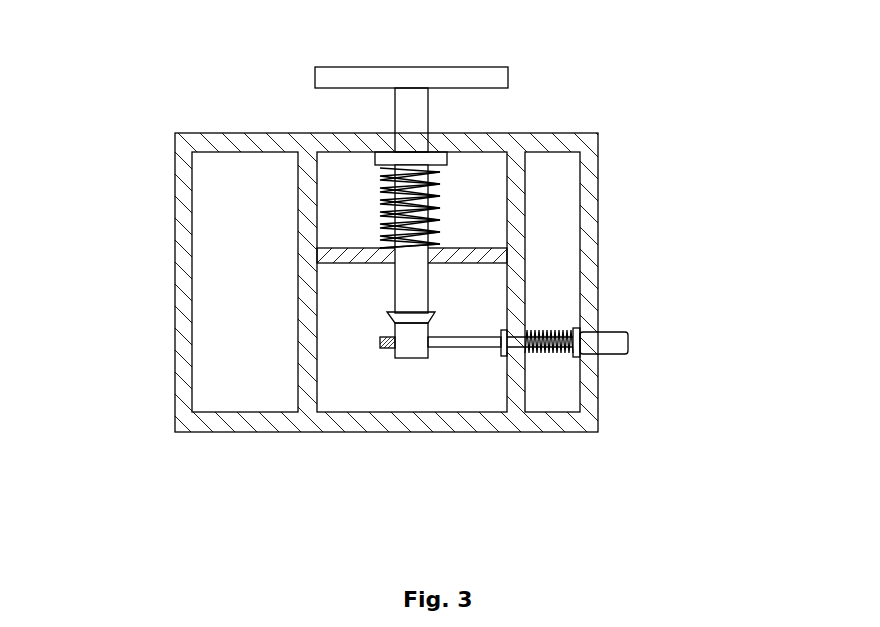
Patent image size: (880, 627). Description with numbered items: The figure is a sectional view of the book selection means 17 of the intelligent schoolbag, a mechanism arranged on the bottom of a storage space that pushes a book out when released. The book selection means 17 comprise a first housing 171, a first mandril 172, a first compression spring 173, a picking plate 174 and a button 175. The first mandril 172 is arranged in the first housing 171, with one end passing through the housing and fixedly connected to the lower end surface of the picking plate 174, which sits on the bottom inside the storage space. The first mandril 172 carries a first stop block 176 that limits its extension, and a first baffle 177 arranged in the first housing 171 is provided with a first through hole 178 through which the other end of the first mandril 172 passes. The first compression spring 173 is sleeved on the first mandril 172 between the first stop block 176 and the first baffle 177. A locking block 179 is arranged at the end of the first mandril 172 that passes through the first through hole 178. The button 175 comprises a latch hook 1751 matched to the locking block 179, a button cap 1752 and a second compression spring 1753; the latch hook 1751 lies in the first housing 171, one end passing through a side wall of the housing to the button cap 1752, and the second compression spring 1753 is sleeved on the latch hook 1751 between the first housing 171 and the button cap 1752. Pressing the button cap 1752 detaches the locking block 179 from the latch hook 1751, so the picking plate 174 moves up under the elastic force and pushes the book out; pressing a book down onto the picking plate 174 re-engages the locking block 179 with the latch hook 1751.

The book selection means 17 is at (173, 247).
The first housing 171 is at (590, 302).
The first mandril 172 is at (398, 318).
The first compression spring 173 is at (443, 193).
The picking plate 174 is at (472, 80).
The button 175 is at (592, 423).
The first stop block 176 is at (420, 157).
The first baffle 177 is at (387, 247).
The first through hole 178 is at (408, 293).
The locking block 179 is at (432, 311).
The latch hook 1751 is at (483, 350).
The button cap 1752 is at (603, 343).
The second compression spring 1753 is at (538, 352).